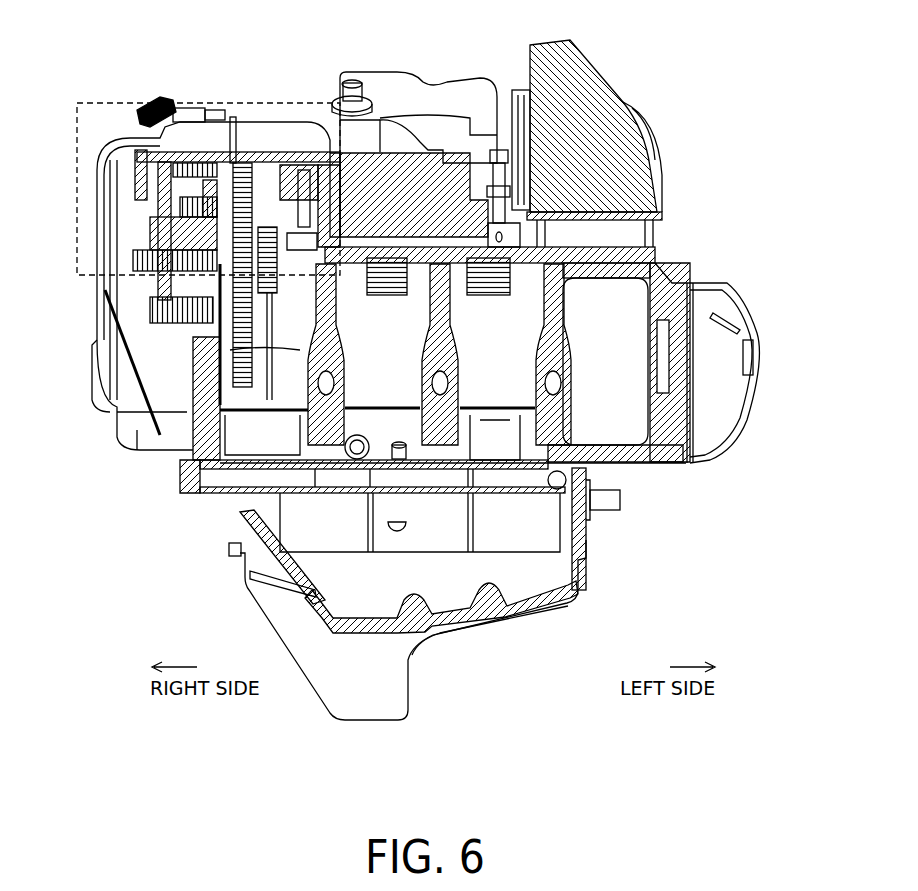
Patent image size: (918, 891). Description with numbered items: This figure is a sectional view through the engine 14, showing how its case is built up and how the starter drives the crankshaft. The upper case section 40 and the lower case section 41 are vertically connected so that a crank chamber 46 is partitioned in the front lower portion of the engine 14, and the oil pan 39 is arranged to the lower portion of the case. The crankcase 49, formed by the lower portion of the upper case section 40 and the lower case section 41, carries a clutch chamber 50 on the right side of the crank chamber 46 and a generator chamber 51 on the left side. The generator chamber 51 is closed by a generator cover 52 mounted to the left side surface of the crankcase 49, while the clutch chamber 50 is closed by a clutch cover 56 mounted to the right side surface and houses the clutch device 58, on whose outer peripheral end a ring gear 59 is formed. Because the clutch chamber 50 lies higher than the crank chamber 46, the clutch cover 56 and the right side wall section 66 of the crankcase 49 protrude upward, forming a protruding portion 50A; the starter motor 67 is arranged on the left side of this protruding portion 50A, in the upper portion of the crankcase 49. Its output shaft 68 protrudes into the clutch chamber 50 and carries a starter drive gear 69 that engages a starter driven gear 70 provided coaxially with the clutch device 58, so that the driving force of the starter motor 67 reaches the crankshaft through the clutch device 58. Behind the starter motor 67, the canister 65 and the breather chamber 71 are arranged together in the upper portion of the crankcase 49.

The engine 14 is at (758, 206).
The oil pan 39 is at (393, 690).
The upper case section 40 is at (638, 262).
The lower case section 41 is at (590, 512).
The crank chamber 46 is at (597, 383).
The crankcase 49 is at (677, 277).
The clutch chamber 50 is at (180, 407).
The protruding portion 50A is at (195, 102).
The generator chamber 51 is at (709, 396).
The generator cover 52 is at (755, 343).
The clutch cover 56 is at (92, 340).
The clutch device 58 is at (150, 318).
The ring gear 59 is at (217, 180).
The canister 65 is at (622, 103).
The right side wall section 66 is at (307, 385).
The starter motor 67 is at (410, 187).
The output shaft 68 is at (298, 193).
The starter drive gear 69 is at (270, 177).
The starter driven gear 70 is at (257, 240).
The breather chamber 71 is at (453, 90).